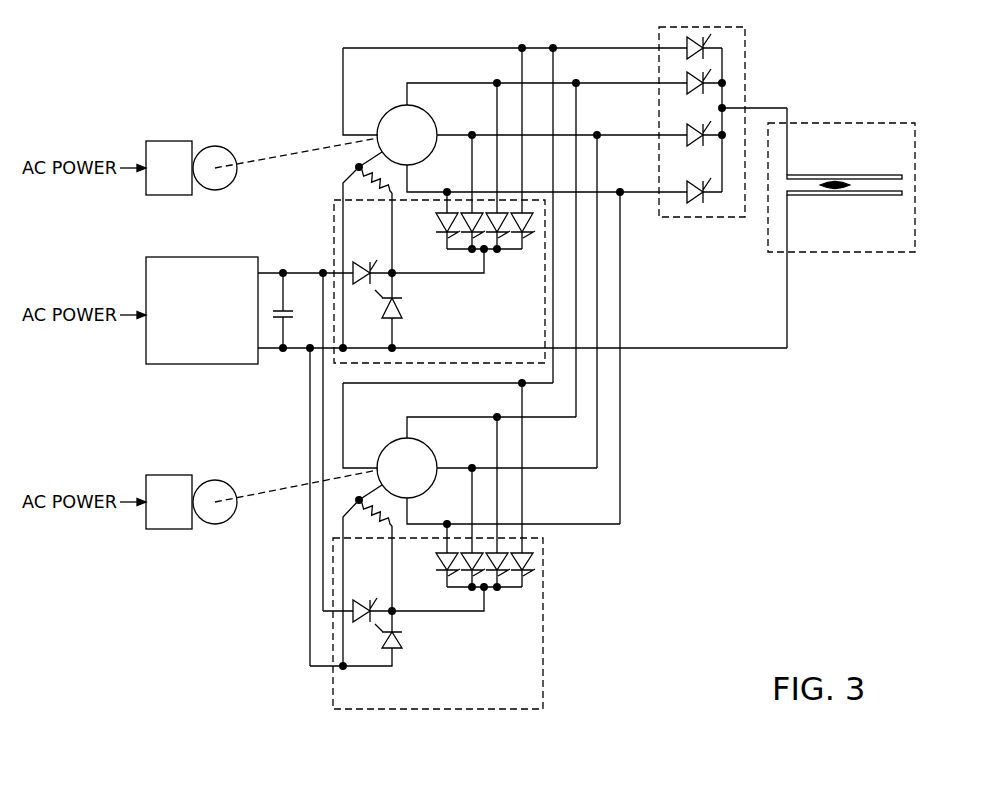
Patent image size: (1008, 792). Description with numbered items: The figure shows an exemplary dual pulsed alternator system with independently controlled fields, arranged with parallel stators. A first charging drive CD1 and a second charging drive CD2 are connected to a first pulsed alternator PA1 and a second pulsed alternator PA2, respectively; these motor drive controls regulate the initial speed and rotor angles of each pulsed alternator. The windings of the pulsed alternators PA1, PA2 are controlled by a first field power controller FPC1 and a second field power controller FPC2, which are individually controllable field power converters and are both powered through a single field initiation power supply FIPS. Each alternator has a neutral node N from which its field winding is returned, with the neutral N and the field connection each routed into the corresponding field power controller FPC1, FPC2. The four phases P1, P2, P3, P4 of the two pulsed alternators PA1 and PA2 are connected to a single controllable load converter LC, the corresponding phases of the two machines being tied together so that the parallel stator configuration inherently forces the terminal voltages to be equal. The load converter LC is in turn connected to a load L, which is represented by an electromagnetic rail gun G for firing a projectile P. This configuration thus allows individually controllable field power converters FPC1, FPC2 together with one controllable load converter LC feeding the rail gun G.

The first charging drive CD1 is at (172, 141).
The second charging drive CD2 is at (172, 475).
The field initiation power supply FIPS is at (466, 461).
The first field power controller FPC1 is at (434, 278).
The second field power controller FPC2 is at (426, 617).
The first pulsed alternator PA1 is at (532, 284).
The second pulsed alternator PA2 is at (481, 466).
The first phase P1 is at (367, 292).
The second phase P2 is at (394, 262).
The third phase P3 is at (451, 292).
The fourth phase P4 is at (421, 345).
The neutral node N is at (366, 405).
The load converter LC is at (723, 134).
The load L is at (841, 225).
The electromagnetic rail gun G is at (844, 228).
The projectile P is at (838, 196).